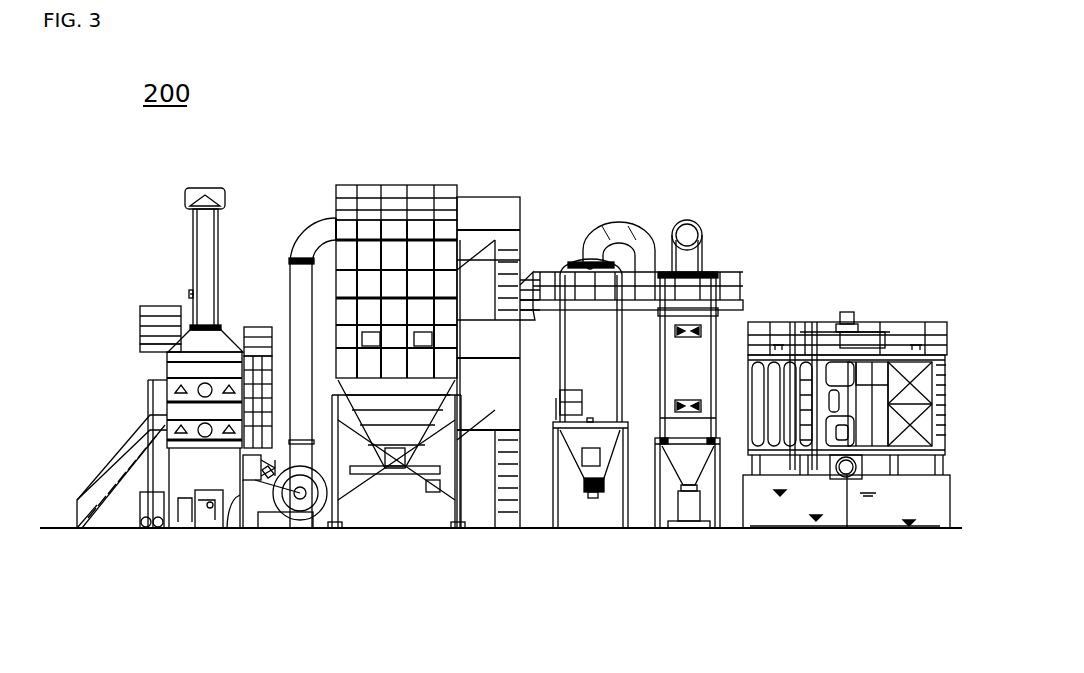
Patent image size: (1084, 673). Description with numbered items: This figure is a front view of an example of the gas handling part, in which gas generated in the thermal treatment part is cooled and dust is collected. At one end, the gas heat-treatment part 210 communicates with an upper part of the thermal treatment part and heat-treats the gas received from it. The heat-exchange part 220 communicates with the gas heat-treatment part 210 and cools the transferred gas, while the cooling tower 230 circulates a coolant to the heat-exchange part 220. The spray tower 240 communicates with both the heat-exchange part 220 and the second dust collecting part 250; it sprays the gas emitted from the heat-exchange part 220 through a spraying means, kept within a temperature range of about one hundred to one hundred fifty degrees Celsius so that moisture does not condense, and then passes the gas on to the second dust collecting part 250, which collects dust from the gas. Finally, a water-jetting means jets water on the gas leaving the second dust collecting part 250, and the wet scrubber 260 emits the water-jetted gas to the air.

The gas heat-treatment part 210 is at (693, 233).
The heat-exchange part 220 is at (790, 510).
The cooling tower 230 is at (665, 512).
The spray tower 240 is at (577, 465).
The second dust collecting part 250 is at (405, 520).
The wet scrubber 260 is at (231, 528).